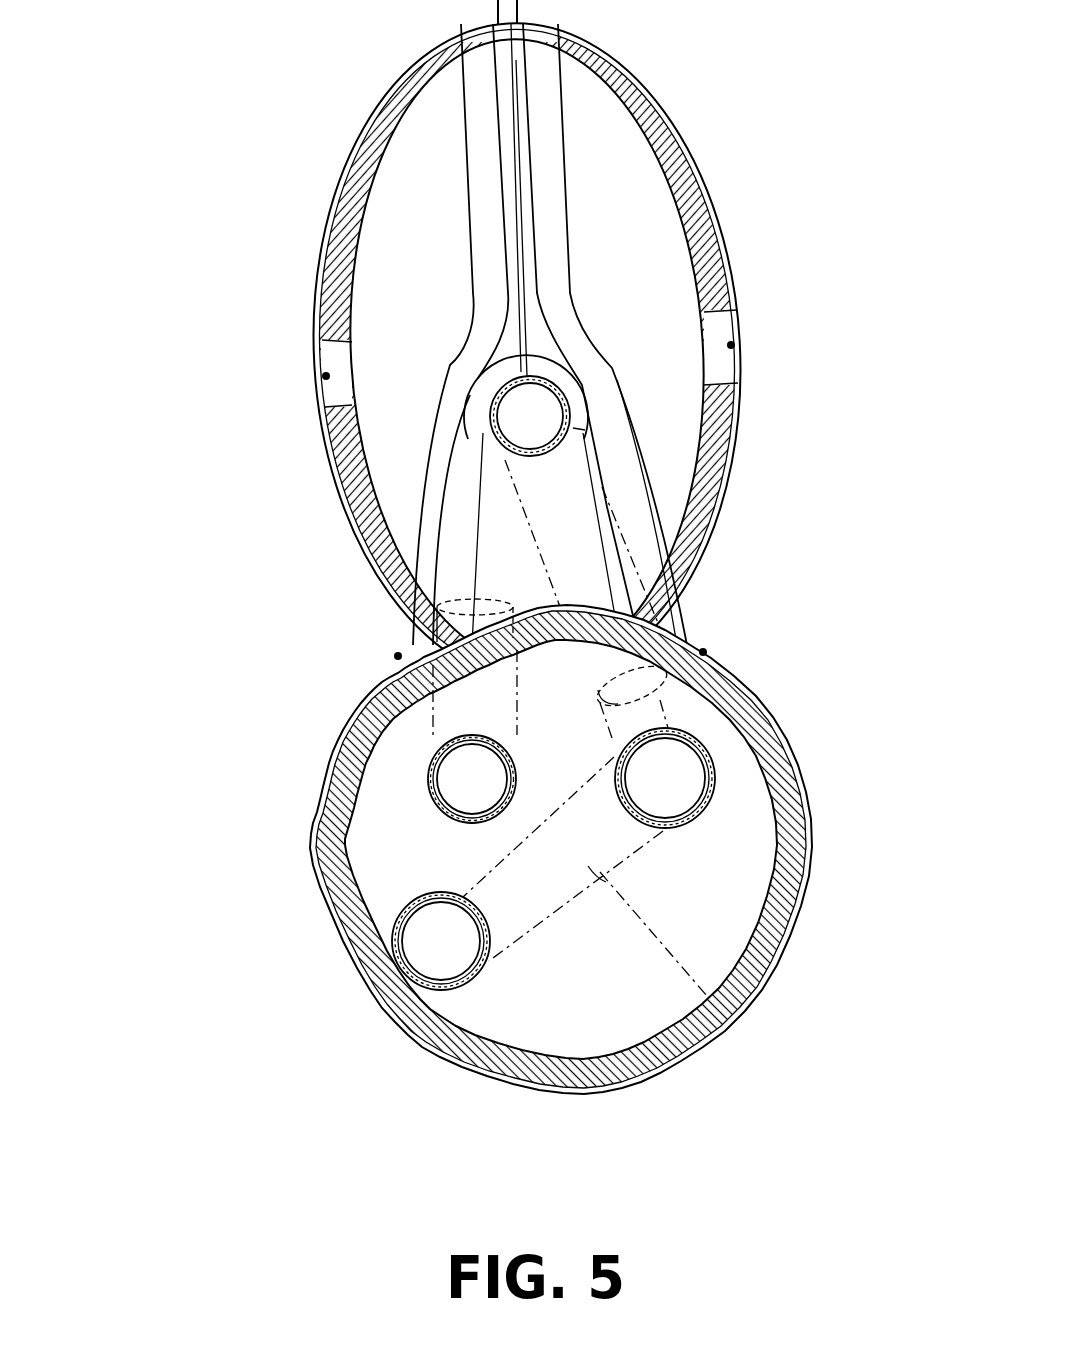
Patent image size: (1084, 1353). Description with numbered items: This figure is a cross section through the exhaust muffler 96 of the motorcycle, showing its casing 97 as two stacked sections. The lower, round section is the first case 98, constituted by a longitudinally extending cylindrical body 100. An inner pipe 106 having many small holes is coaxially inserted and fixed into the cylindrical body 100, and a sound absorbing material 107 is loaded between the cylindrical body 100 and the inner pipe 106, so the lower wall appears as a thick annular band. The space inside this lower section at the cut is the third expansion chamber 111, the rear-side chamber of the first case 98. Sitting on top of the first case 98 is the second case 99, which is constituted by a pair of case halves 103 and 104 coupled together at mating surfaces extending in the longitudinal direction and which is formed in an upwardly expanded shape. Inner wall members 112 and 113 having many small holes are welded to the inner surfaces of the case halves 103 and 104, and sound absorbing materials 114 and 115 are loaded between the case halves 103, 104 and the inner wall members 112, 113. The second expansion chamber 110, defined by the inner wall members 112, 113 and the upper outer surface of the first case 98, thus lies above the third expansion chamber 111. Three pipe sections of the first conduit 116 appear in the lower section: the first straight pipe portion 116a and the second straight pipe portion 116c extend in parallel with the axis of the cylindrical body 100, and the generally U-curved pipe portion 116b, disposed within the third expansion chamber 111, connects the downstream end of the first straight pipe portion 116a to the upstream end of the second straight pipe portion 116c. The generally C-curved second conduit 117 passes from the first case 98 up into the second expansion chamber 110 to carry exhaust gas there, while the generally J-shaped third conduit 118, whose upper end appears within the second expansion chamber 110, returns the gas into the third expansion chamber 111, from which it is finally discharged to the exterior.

The exhaust muffler 96 is at (352, 980).
The casing 97 is at (165, 491).
The first case 98 is at (363, 700).
The second case 99 is at (330, 483).
The cylindrical body 100 is at (790, 760).
The case half 103 is at (738, 293).
The case half 104 is at (318, 293).
The inner pipe 106 is at (808, 828).
The sound absorbing material 107 is at (793, 935).
The second expansion chamber 110 is at (662, 335).
The third expansion chamber 111 is at (607, 987).
The inner wall member 112 is at (650, 170).
The inner wall member 113 is at (377, 207).
The sound absorbing material 114 is at (700, 193).
The sound absorbing material 115 is at (343, 182).
The first conduit 116 is at (703, 737).
The first straight pipe portion 116a is at (432, 991).
The curved pipe portion 116b is at (727, 986).
The second straight pipe portion 116c is at (806, 792).
The second conduit 117 is at (433, 806).
The third conduit 118 is at (566, 386).